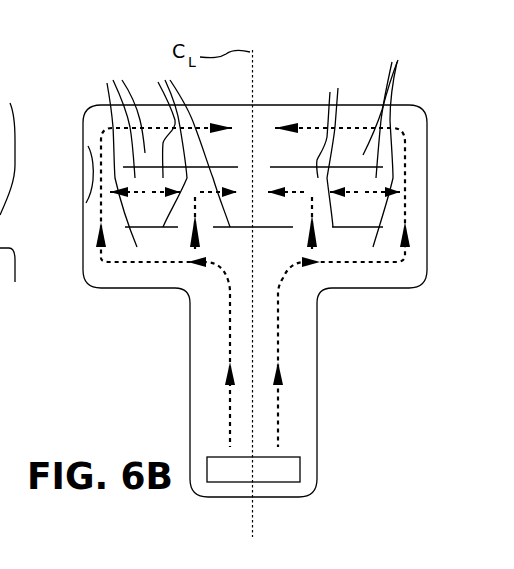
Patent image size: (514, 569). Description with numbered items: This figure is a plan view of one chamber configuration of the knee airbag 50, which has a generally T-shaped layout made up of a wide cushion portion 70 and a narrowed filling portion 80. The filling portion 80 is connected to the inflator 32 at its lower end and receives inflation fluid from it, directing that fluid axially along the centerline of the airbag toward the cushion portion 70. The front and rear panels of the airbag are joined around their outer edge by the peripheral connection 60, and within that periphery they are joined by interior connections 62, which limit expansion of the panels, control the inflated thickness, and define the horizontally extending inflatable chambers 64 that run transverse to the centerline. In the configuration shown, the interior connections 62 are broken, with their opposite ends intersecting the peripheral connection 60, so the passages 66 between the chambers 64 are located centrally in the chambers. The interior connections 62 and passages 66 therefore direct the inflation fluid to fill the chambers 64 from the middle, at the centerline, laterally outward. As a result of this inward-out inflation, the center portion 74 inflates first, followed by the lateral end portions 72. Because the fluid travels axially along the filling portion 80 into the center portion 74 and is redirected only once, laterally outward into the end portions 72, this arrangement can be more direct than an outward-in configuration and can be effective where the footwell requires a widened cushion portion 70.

The inflator 32 is at (263, 468).
The knee airbag 50 is at (81, 90).
The peripheral connection 60 is at (82, 175).
The interior connections 62 is at (254, 141).
The inflatable chambers 64 is at (258, 141).
The passages 66 is at (257, 167).
The cushion portion 70 is at (437, 247).
The lateral end portions 72 is at (88, 143).
The center portion 74 is at (277, 118).
The filling portion 80 is at (327, 397).